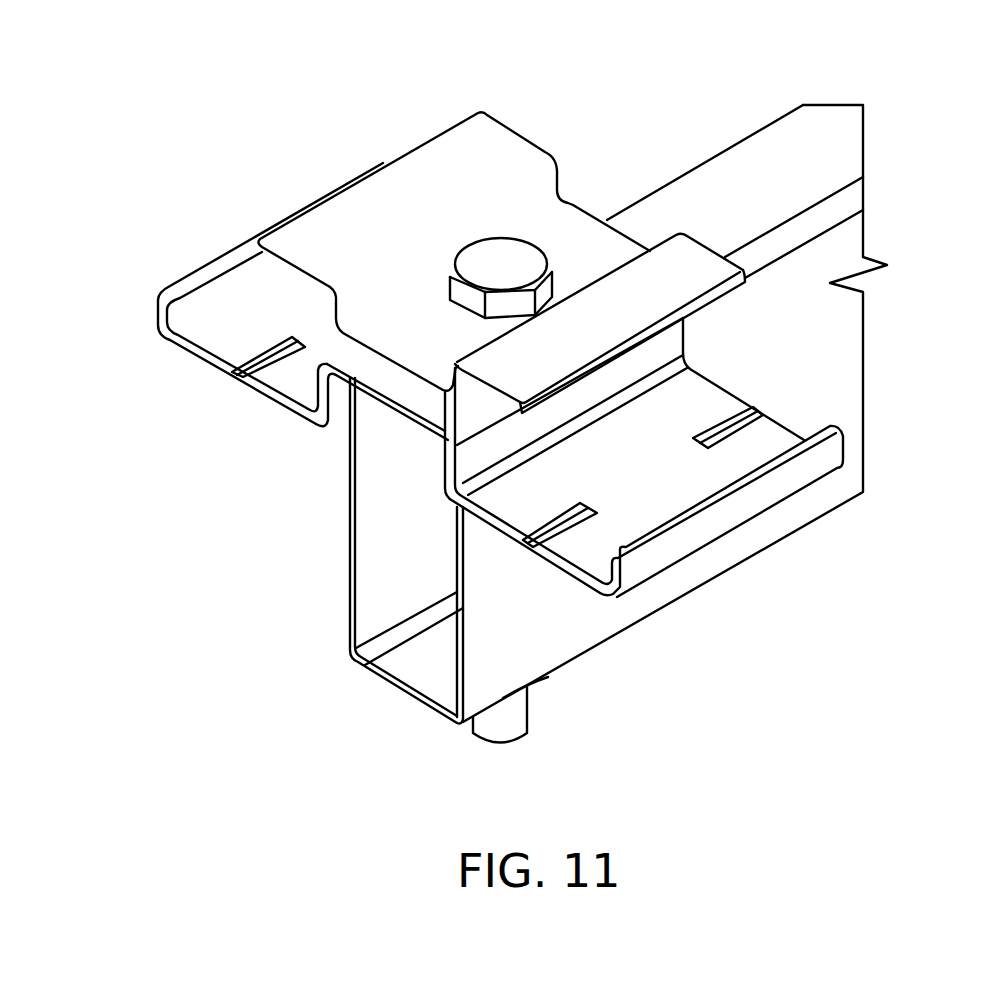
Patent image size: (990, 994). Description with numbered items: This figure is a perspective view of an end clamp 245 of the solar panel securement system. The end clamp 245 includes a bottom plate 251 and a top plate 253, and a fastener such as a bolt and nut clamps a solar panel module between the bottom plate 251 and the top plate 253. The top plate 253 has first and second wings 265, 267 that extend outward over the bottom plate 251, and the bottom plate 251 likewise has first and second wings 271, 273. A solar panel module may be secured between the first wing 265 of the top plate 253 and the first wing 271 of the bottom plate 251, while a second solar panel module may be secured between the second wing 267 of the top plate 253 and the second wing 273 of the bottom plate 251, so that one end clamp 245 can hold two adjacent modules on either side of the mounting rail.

The first end clamp 245 is at (538, 663).
The bottom plate 251 is at (468, 424).
The top plate 253 is at (413, 345).
The first wing 265 is at (705, 273).
The second wing 267 is at (497, 155).
The first wing 271 is at (663, 548).
The second wing 273 is at (213, 337).